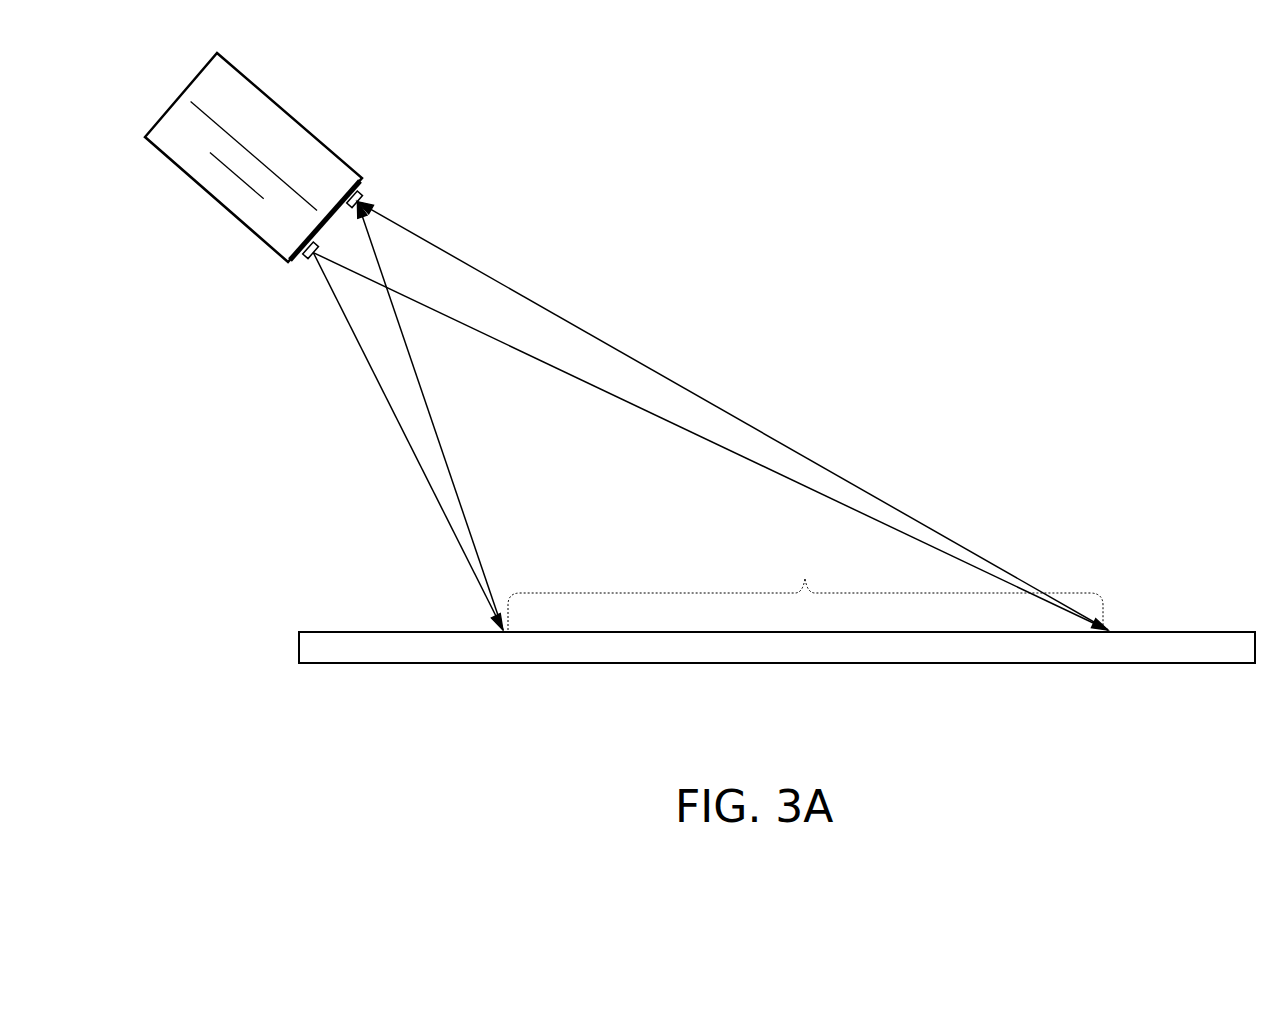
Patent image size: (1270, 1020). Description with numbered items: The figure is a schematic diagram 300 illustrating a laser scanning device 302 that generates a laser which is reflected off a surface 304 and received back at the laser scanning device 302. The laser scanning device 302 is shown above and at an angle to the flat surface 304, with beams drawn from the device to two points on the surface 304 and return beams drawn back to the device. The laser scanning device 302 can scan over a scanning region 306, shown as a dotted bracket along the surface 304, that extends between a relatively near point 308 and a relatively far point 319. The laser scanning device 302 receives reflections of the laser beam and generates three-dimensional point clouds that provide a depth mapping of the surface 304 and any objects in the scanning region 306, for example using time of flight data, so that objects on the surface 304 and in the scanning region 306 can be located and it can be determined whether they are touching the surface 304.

The schematic diagram 300 is at (780, 722).
The laser scanning device 302 is at (219, 201).
The surface 304 is at (1173, 630).
The scanning region 306 is at (805, 589).
The relatively near point 308 is at (503, 630).
The second scan point 319 is at (1110, 630).